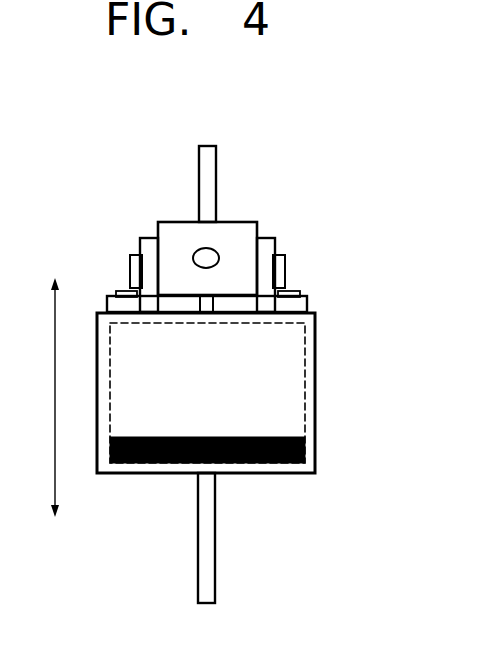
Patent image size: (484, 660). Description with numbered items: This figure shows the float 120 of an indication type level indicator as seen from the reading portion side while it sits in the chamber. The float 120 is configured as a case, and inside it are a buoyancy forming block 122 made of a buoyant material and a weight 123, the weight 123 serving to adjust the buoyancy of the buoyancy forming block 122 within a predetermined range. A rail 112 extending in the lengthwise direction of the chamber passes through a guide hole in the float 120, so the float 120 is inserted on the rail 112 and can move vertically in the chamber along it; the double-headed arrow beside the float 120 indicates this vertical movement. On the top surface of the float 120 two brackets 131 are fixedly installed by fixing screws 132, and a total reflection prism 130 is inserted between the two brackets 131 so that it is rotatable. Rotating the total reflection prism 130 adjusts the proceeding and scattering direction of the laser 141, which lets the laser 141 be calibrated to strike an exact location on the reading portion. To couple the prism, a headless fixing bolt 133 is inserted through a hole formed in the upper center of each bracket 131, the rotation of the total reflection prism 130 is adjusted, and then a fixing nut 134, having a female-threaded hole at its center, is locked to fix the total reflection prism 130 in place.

The rail 112 is at (216, 157).
The float 120 is at (315, 415).
The buoyancy forming block 122 is at (305, 367).
The weight 123 is at (272, 463).
The total reflection prism 130 is at (241, 232).
The bracket 131 is at (147, 238).
The fixing screw 132 is at (118, 292).
The fixing bolt 133 is at (130, 260).
The fixing nut 134 is at (283, 262).
The laser 141 is at (204, 247).